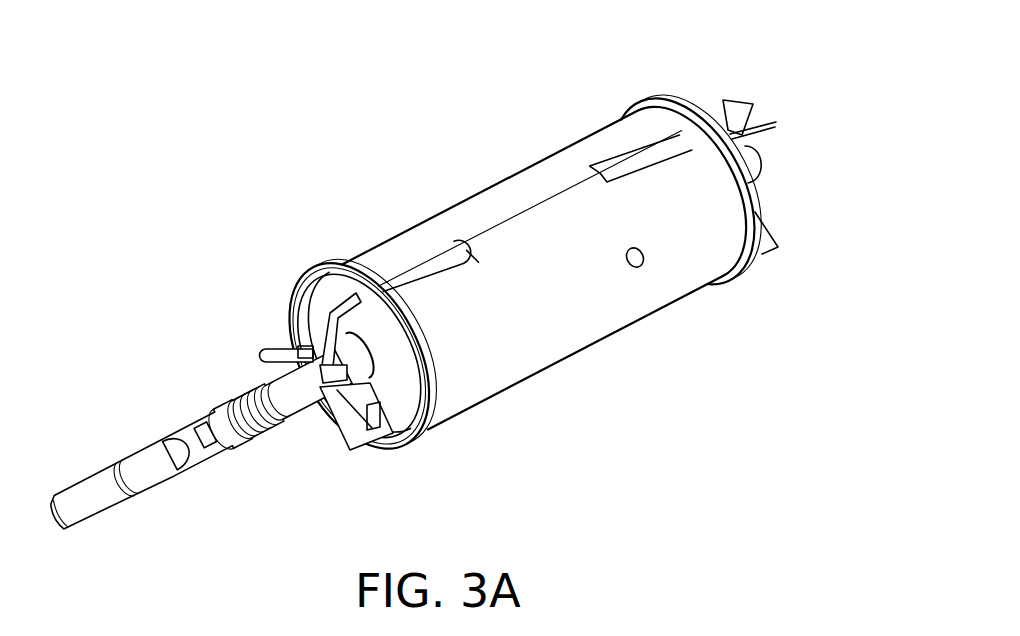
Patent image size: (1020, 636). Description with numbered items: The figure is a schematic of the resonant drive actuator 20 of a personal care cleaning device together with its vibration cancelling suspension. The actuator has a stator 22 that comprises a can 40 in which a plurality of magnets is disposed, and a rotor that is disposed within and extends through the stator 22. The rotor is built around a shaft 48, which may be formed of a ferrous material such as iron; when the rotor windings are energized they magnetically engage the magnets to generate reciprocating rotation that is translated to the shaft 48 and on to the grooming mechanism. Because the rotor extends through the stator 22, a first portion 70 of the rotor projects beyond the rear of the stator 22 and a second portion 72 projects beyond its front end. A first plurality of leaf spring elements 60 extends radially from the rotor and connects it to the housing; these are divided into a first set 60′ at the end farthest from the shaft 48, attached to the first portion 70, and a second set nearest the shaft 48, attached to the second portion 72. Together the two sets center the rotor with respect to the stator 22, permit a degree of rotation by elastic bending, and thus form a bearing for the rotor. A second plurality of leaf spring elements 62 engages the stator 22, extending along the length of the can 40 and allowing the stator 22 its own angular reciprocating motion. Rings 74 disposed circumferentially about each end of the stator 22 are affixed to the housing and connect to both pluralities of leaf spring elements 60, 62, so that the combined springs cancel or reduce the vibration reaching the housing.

The resonant drive actuator 20 is at (216, 124).
The stator 22 is at (537, 162).
The can 40 is at (611, 318).
The shaft 48 is at (153, 438).
The first plurality of leaf spring elements 60 is at (266, 367).
The first set of leaf spring elements 60′ is at (723, 120).
The second plurality of leaf spring elements 62 is at (440, 263).
The first portion of rotor 70 is at (762, 165).
The second portion of rotor 72 is at (277, 437).
The rings 74 is at (338, 266).